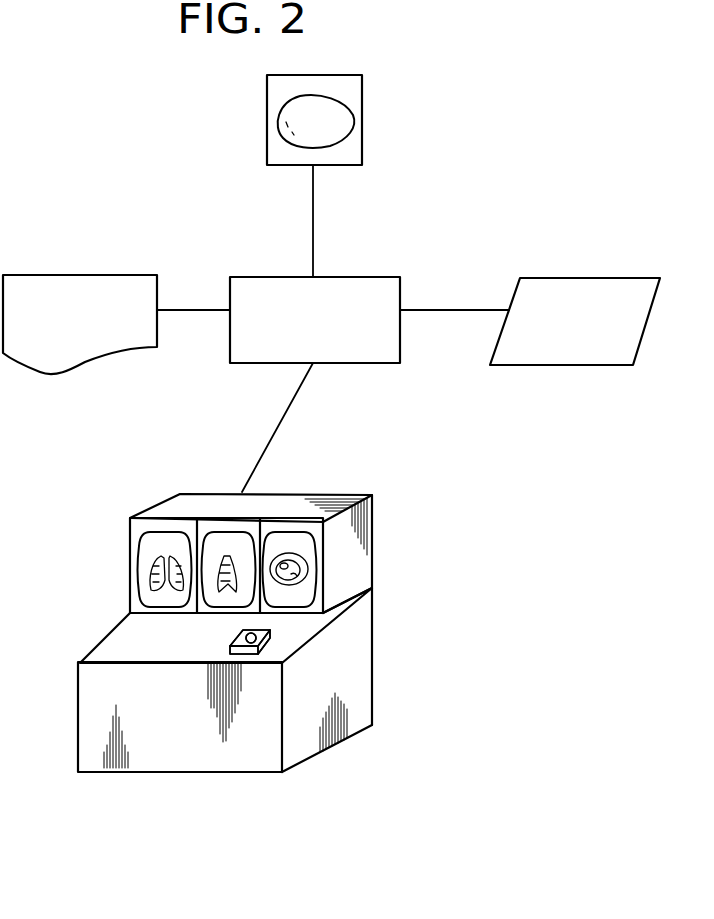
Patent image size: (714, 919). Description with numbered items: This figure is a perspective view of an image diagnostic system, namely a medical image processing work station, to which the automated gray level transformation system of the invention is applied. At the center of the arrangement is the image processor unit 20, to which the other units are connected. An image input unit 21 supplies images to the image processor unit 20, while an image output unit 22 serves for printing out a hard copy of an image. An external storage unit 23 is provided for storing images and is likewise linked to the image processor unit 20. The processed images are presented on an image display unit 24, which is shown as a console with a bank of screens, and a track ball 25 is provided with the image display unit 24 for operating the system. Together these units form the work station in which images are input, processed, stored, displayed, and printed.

The image processor unit 20 is at (337, 277).
The image input unit 21 is at (575, 278).
The image output unit 22 is at (85, 275).
The external storage unit 23 is at (362, 116).
The image display unit 24 is at (372, 642).
The track ball 25 is at (232, 645).